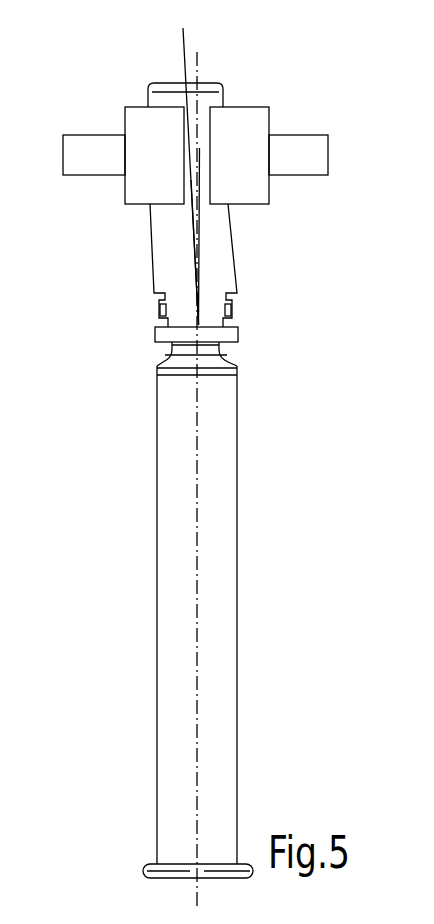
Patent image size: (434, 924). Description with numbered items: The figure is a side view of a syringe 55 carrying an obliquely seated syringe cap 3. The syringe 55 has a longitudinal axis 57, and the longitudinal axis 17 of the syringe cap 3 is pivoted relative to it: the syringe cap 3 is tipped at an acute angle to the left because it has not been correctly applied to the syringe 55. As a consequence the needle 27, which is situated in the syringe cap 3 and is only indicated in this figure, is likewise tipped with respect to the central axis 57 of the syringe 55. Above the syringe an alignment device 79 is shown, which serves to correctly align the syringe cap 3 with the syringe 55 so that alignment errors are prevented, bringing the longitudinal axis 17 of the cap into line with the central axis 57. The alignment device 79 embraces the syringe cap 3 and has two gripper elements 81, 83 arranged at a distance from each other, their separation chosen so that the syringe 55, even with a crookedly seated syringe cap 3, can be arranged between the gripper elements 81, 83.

The syringe cap 3 is at (242, 260).
The longitudinal axis of the syringe cap 17 is at (185, 57).
The needle 27 is at (192, 230).
The syringe 55 is at (145, 550).
The longitudinal axis 57 is at (197, 478).
The alignment device 79 is at (221, 140).
The gripper element 81 is at (100, 160).
The gripper element 83 is at (257, 187).